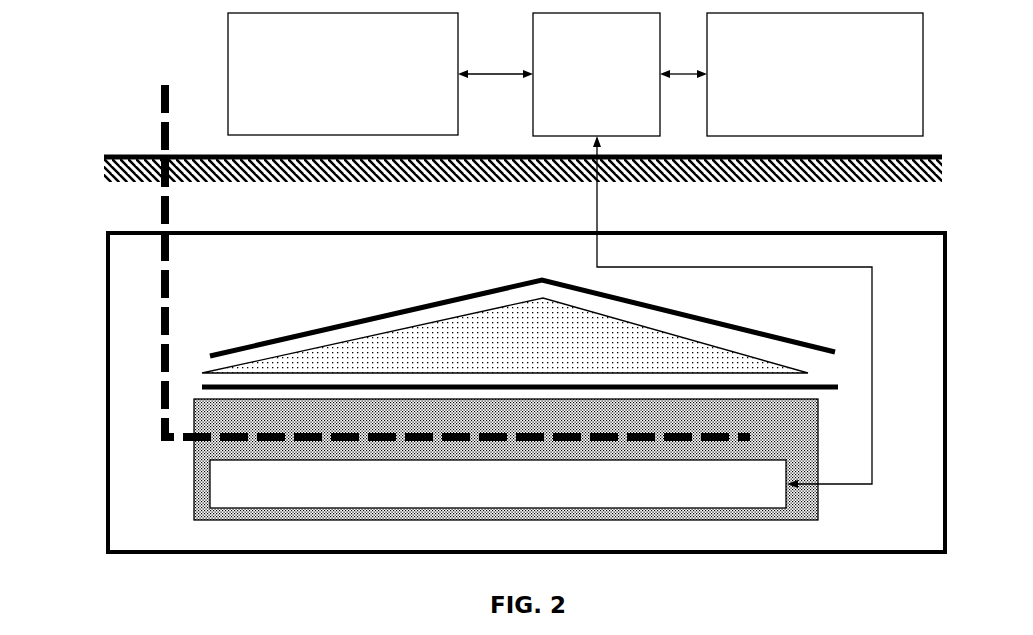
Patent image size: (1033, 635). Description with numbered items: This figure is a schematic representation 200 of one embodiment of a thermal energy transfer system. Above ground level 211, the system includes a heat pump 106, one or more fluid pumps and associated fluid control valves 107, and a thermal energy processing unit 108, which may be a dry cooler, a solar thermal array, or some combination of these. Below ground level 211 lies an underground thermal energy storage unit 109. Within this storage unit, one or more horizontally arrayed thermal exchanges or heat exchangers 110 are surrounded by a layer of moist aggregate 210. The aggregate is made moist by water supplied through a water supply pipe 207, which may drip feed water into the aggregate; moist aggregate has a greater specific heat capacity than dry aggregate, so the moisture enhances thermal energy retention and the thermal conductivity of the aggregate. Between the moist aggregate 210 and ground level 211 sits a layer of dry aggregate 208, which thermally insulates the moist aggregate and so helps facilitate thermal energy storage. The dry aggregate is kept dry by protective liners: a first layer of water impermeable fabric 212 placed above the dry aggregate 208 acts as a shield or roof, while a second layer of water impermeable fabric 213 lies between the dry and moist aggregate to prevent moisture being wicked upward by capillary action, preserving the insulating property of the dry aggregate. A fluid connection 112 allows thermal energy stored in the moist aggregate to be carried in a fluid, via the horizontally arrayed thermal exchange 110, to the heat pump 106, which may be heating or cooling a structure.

The heat pump 106 is at (343, 74).
The fluid pumps and associated fluid control valves 107 is at (596, 74).
The thermal energy processing unit 108 is at (815, 74).
The underground thermal energy storage unit 109 is at (526, 392).
The horizontally arrayed thermal exchange 110 is at (498, 484).
The fluid connection 112 is at (828, 263).
The schematic representation 200 is at (507, 581).
The water supply pipe 207 is at (160, 200).
The layer of dry aggregate 208 is at (690, 338).
The layer of moist aggregate 210 is at (824, 440).
The ground level 211 is at (130, 157).
The first layer of water impermeable fabric 212 is at (230, 342).
The second layer of water impermeable fabric 213 is at (205, 388).